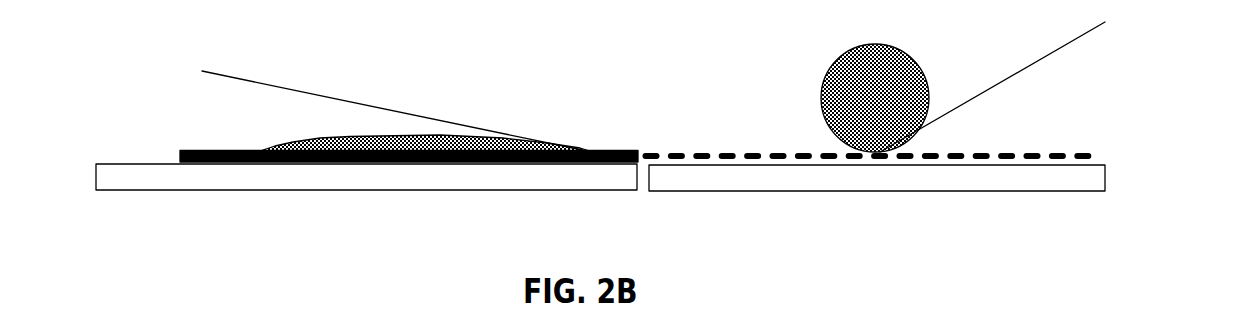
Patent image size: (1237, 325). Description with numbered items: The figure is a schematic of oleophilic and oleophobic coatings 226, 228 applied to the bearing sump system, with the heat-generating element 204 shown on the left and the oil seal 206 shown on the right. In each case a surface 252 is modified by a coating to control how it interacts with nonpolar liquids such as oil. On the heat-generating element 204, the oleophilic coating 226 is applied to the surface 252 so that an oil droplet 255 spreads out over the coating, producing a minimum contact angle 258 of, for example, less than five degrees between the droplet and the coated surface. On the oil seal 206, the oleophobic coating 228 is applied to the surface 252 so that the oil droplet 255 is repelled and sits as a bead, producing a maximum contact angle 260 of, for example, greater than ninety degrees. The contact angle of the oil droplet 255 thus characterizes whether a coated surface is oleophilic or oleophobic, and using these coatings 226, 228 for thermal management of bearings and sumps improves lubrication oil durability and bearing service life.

The heat-generating element 204 is at (140, 190).
The oil seal 206 is at (1107, 168).
The oleophilic coating 226 is at (598, 151).
The oleophobic coating 228 is at (1000, 150).
The surface 252 is at (130, 139).
The oil droplet 255 is at (503, 137).
The minimum contact angle 258 is at (417, 117).
The maximum contact angle 260 is at (813, 107).